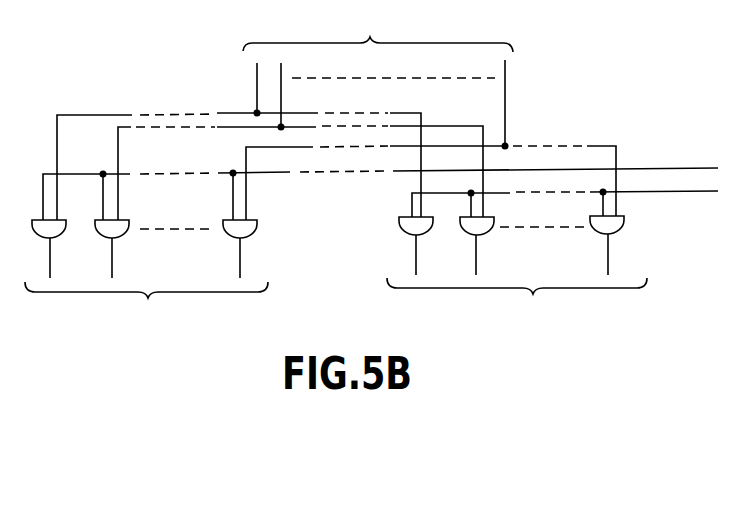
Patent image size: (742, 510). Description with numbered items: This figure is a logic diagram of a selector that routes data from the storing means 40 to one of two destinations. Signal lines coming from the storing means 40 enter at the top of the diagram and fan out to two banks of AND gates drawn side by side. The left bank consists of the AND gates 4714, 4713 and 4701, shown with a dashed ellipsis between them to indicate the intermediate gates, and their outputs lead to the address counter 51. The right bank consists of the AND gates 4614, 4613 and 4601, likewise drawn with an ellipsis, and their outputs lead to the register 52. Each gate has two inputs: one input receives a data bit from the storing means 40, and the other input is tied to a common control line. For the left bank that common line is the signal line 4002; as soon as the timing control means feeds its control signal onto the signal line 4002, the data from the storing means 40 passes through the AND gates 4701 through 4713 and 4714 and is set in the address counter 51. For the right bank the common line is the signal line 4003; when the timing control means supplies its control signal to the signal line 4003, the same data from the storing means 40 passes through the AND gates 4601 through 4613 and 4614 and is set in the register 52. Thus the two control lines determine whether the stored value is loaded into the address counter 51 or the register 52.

The storing means 40 is at (378, 31).
The address counter 51 is at (146, 303).
The register 52 is at (517, 300).
The signal line 4002 is at (704, 167).
The signal line 4003 is at (708, 192).
The AND gate 4714 is at (42, 239).
The AND gate 4713 is at (99, 238).
The AND gate 4701 is at (235, 239).
The AND gate 4614 is at (402, 232).
The AND gate 4613 is at (468, 234).
The AND gate 4601 is at (597, 234).